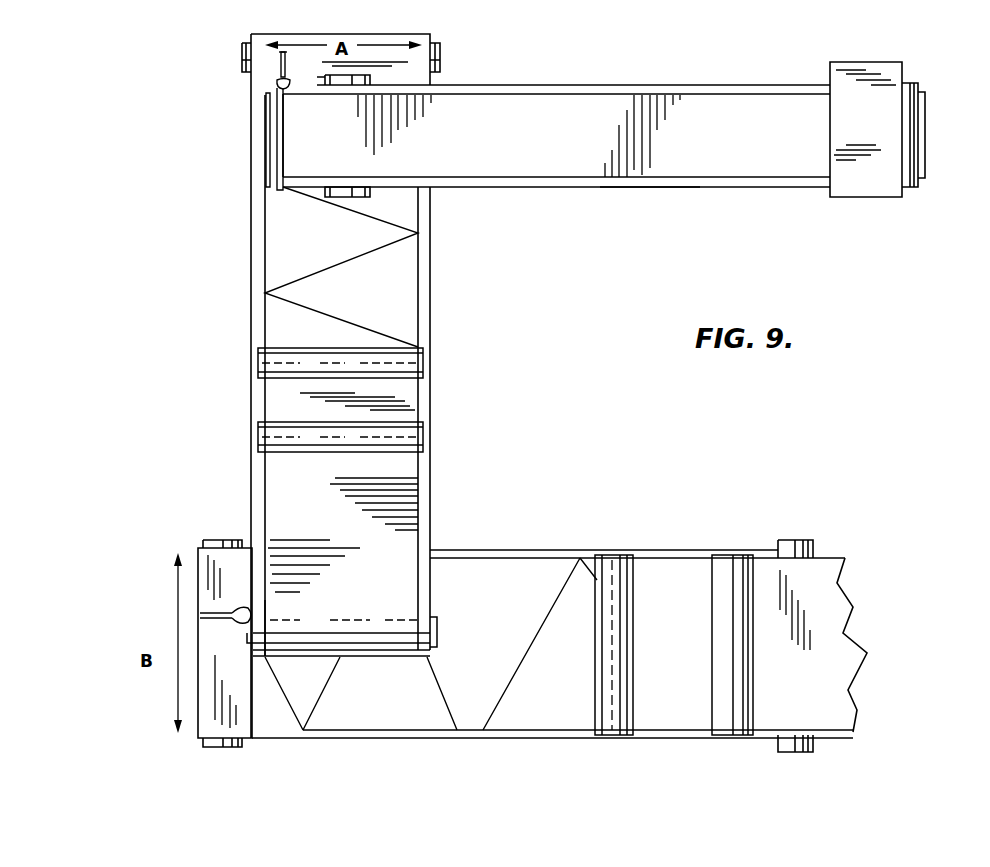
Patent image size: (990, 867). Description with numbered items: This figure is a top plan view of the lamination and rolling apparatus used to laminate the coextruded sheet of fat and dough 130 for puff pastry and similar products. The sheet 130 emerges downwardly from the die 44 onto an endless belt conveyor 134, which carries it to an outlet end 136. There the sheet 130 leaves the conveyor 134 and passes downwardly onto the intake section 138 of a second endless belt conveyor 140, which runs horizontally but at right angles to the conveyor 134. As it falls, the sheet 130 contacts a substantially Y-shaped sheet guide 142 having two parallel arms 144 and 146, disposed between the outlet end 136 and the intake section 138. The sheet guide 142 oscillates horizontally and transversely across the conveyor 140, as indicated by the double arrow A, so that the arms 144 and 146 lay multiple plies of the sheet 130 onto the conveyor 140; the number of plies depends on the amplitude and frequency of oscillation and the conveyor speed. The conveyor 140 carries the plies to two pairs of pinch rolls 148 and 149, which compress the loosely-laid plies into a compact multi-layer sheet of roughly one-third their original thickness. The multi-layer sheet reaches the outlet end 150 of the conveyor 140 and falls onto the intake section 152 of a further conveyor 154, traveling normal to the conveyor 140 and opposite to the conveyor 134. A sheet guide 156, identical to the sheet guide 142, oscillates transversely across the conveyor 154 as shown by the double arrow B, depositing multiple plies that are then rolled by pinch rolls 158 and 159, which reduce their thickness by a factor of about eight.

The coextruded sheet of fat and dough 130 is at (583, 141).
The endless belt conveyor 134 is at (626, 197).
The die 44 is at (855, 183).
The outlet end 136 is at (280, 58).
The sheet guide 142 is at (278, 70).
The arm 146 is at (277, 87).
The arm 144 is at (277, 127).
The intake section 138 is at (257, 163).
The second endless belt conveyor 140 is at (244, 349).
The pinch rolls 148 is at (410, 363).
The pinch rolls 149 is at (410, 433).
The outlet end 150 is at (405, 650).
The intake section 152 is at (340, 735).
The further conveyor 154 is at (581, 543).
The sheet guide 156 is at (205, 615).
The pinch rolls 158 is at (633, 562).
The pinch rolls 159 is at (737, 567).